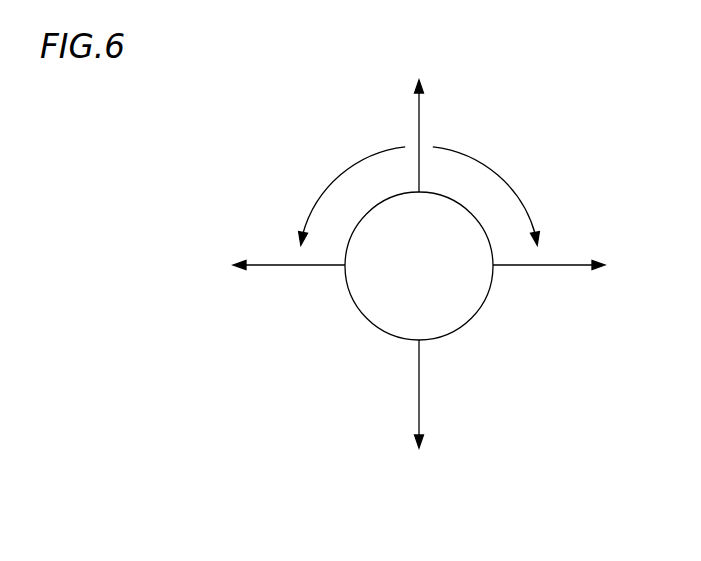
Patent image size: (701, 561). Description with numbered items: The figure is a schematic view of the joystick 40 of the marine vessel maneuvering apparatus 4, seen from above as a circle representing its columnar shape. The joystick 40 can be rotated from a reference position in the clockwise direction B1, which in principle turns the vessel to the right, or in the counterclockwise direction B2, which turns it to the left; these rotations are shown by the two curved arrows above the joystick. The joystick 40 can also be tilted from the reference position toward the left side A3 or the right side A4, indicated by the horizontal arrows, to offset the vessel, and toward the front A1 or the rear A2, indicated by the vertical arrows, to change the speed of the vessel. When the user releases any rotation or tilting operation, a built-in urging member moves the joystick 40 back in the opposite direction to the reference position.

The joystick 40 is at (483, 292).
The marine vessel maneuvering apparatus 4 is at (420, 264).
The front A1 is at (436, 136).
The rear A2 is at (436, 394).
The left side A3 is at (289, 279).
The right side A4 is at (550, 279).
The clockwise direction B1 is at (495, 196).
The counterclockwise direction B2 is at (341, 196).